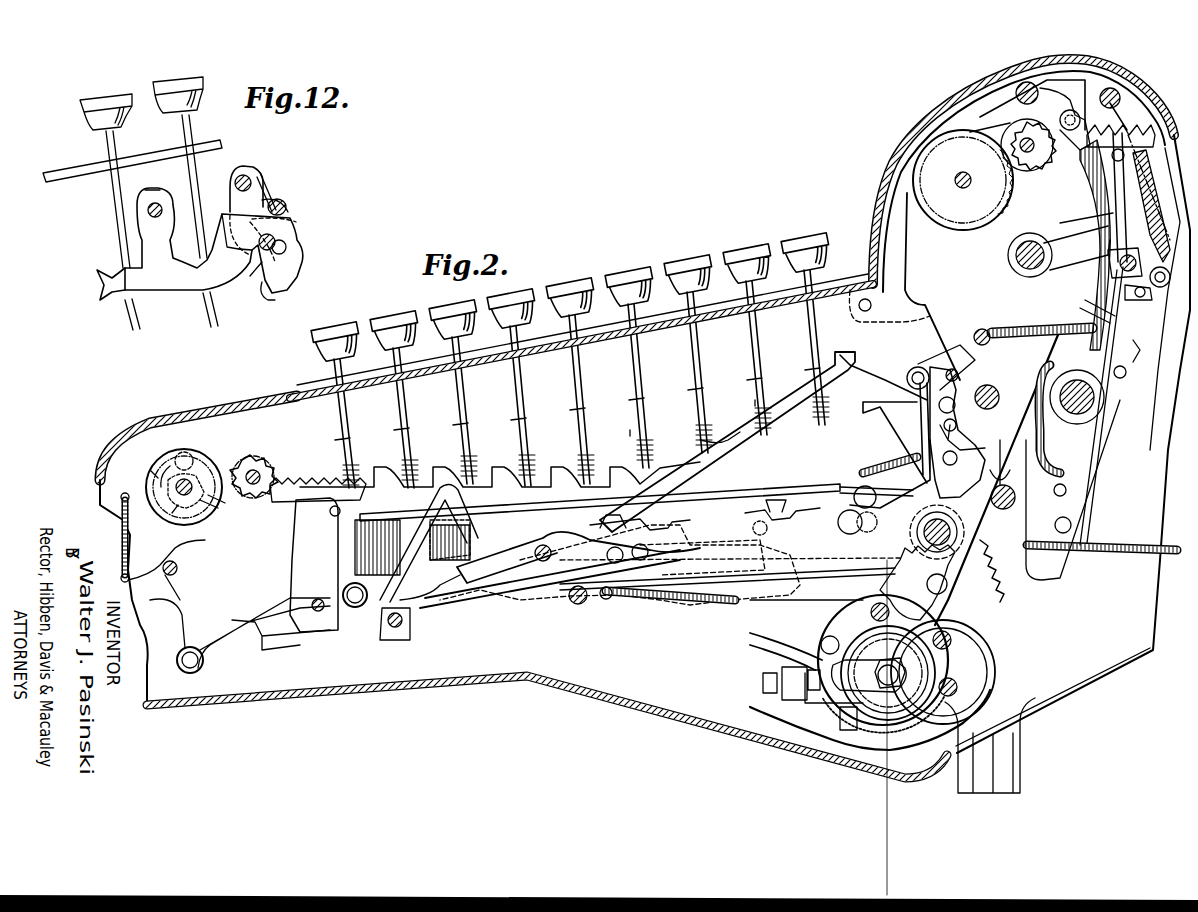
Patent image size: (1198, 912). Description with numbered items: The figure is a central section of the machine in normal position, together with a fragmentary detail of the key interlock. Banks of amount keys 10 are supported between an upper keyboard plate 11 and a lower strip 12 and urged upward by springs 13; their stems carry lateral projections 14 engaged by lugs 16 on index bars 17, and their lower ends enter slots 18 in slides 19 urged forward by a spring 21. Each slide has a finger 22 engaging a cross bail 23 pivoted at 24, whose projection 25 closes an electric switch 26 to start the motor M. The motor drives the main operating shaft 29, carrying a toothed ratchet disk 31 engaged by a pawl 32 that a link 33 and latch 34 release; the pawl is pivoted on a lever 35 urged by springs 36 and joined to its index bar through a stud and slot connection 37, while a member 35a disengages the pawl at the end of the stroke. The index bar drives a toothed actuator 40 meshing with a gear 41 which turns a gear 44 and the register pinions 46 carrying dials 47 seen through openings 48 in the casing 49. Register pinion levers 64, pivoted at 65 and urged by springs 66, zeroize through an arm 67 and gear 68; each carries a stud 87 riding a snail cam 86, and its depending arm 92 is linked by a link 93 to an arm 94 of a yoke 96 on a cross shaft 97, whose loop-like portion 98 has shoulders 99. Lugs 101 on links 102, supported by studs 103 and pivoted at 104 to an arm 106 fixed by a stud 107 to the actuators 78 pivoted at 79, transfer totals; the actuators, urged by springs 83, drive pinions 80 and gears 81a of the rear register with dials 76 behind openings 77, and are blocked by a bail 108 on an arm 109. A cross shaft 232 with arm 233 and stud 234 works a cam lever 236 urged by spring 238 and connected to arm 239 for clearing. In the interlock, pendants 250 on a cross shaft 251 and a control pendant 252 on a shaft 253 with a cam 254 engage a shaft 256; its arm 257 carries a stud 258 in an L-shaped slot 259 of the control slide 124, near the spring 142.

In FIG. 12, the amount keys 10 is at (158, 82).
In FIG. 2, the amount keys 10 is at (668, 268).
In FIG. 12, the upper keyboard plate 11 is at (72, 172).
In FIG. 2, the upper keyboard plate 11 is at (530, 360).
In FIG. 2, the lower strip 12 is at (792, 480).
In FIG. 2, the springs 13 is at (632, 440).
In FIG. 2, the lateral projections 14 is at (756, 398).
In FIG. 2, the lugs 16 is at (780, 402).
In FIG. 2, the index bars 17 is at (742, 432).
In FIG. 2, the slots 18 is at (660, 512).
In FIG. 2, the slides 19 is at (812, 515).
In FIG. 2, the spring 21 is at (650, 568).
In FIG. 2, the finger 22 is at (732, 565).
In FIG. 2, the cross bail 23 is at (772, 572).
In FIG. 2, the pivot 24 is at (770, 528).
In FIG. 2, the projection 25 is at (826, 628).
In FIG. 2, the electric switch 26 is at (840, 690).
In FIG. 2, the main operating shaft 29 is at (960, 530).
In FIG. 2, the toothed ratchet disk 31 is at (985, 585).
In FIG. 2, the pawl 32 is at (975, 450).
In FIG. 2, the link 33 is at (905, 490).
In FIG. 2, the latch 34 is at (1012, 470).
In FIG. 2, the lever 35 is at (900, 418).
In FIG. 2, the member 35a is at (896, 340).
In FIG. 2, the springs 36 is at (628, 600).
In FIG. 2, the stud and slot connection 37 is at (916, 366).
In FIG. 2, the toothed actuator 40 is at (325, 520).
In FIG. 2, the gear 41 is at (263, 474).
In FIG. 2, the gear 44 is at (262, 456).
In FIG. 2, the register pinions 46 is at (205, 470).
In FIG. 2, the dials 47 is at (160, 456).
In FIG. 2, the openings 48 is at (165, 418).
In FIG. 2, the casing 49 is at (284, 397).
In FIG. 2, the register pinion levers 64 is at (185, 547).
In FIG. 2, the pivot 65 is at (180, 582).
In FIG. 2, the springs 66 is at (130, 538).
In FIG. 2, the arm 67 is at (245, 503).
In FIG. 2, the gear 68 is at (190, 455).
In FIG. 2, the dials 76 is at (935, 218).
In FIG. 2, the openings 77 is at (932, 130).
In FIG. 2, the actuators 78 is at (1133, 178).
In FIG. 2, the shaft 79 is at (1118, 263).
In FIG. 2, the pinions 80 is at (1028, 160).
In FIG. 2, the gears 81a is at (1021, 125).
In FIG. 2, the springs 83 is at (1160, 250).
In FIG. 2, the snail cam 86 is at (222, 512).
In FIG. 2, the stud 87 is at (160, 480).
In FIG. 2, the depending arm 92 is at (196, 630).
In FIG. 2, the link 93 is at (268, 606).
In FIG. 2, the arm 94 is at (348, 618).
In FIG. 2, the yoke 96 is at (397, 642).
In FIG. 2, the cross shaft 97 is at (388, 630).
In FIG. 2, the loop-like portion 98 is at (432, 498).
In FIG. 2, the shoulders 99 is at (412, 545).
In FIG. 2, the lugs 101 is at (428, 610).
In FIG. 2, the links 102 is at (512, 598).
In FIG. 2, the studs 103 is at (545, 576).
In FIG. 2, the pivotal connection 104 is at (1118, 406).
In FIG. 2, the arm 106 is at (1075, 368).
In FIG. 2, the stud 107 is at (1147, 198).
In FIG. 2, the bail 108 is at (1094, 394).
In FIG. 2, the arm 109 is at (1085, 305).
In FIG. 12, the control slide 124 is at (292, 272).
In FIG. 12, the spring 142 is at (283, 300).
In FIG. 2, the cross shaft 232 is at (1033, 243).
In FIG. 2, the arm 233 is at (1062, 262).
In FIG. 2, the stud 234 is at (1082, 222).
In FIG. 2, the cam lever 236 is at (1098, 175).
In FIG. 2, the spring 238 is at (1025, 330).
In FIG. 2, the arm 239 is at (1075, 82).
In FIG. 12, the pendant 250 is at (176, 287).
In FIG. 12, the cross shaft 251 is at (160, 202).
In FIG. 12, the control pendant 252 is at (266, 186).
In FIG. 12, the shaft 253 is at (250, 172).
In FIG. 12, the cam 254 is at (284, 201).
In FIG. 12, the shaft 256 is at (287, 207).
In FIG. 12, the arm 257 is at (296, 223).
In FIG. 12, the stud 258 is at (288, 249).
In FIG. 12, the L-shaped slot 259 is at (256, 270).
In FIG. 2, the electric motor M is at (894, 646).